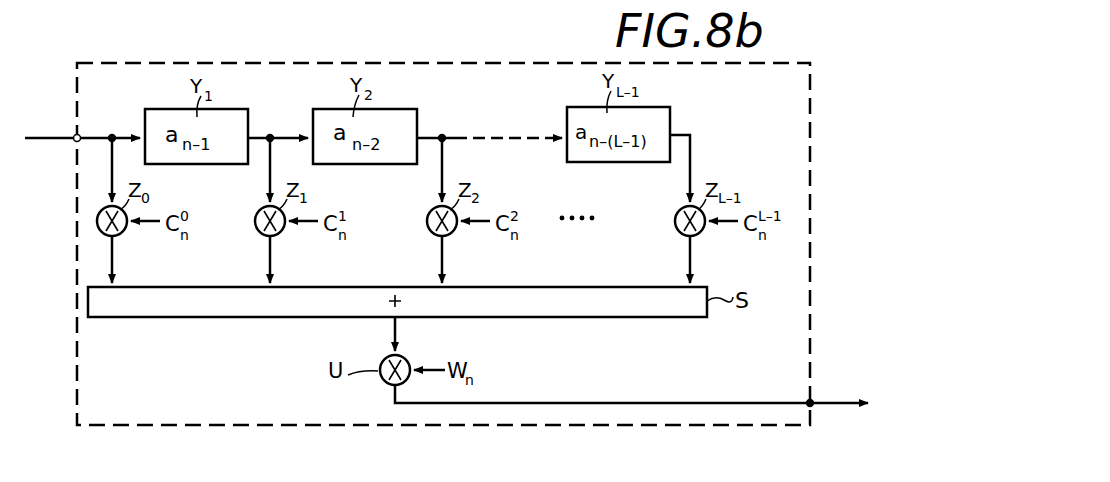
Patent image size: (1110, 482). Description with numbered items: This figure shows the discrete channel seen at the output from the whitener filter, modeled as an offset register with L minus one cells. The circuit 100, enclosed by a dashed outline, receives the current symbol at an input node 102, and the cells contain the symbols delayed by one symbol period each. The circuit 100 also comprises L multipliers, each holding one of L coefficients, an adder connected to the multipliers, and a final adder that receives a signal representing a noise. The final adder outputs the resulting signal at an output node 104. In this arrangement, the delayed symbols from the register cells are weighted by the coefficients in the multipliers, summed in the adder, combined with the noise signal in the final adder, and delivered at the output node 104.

The encoder / filter circuit 100 is at (790, 120).
The input terminal 102 is at (76, 141).
The output terminal 104 is at (812, 405).